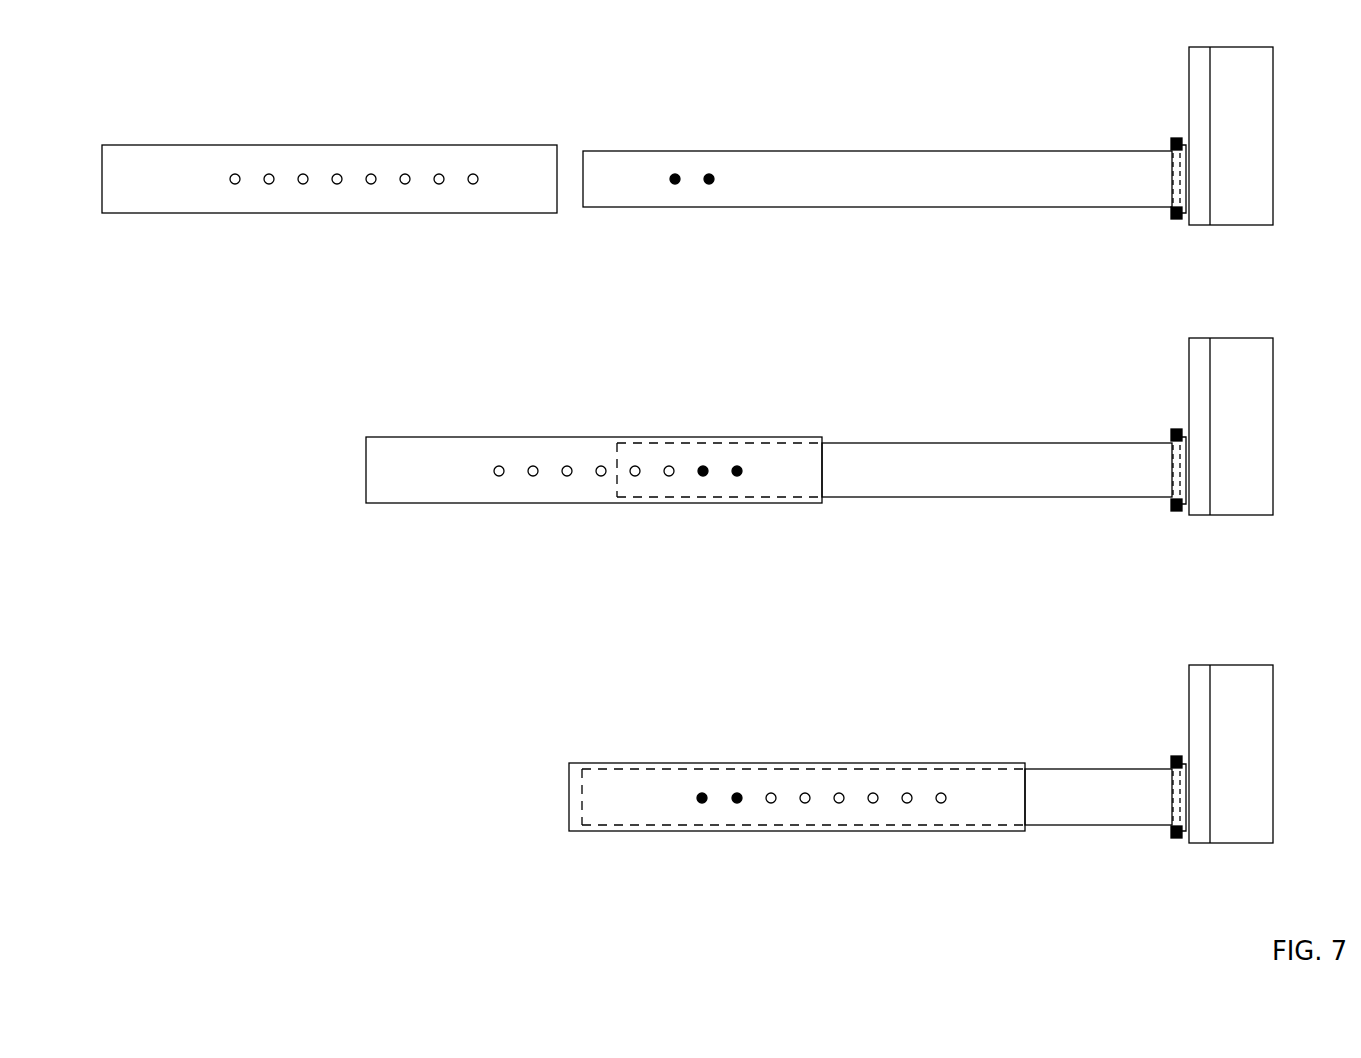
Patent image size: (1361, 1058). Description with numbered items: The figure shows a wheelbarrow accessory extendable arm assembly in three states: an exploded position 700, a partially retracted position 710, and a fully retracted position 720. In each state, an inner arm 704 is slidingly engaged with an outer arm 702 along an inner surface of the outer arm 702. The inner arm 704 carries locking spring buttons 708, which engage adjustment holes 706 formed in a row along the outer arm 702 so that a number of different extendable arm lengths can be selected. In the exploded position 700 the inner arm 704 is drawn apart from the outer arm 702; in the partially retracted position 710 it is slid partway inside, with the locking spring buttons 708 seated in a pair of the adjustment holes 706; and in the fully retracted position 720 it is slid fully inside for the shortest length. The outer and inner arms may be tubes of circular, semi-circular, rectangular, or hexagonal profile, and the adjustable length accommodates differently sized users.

The exploded position 700 is at (135, 76).
The outer arm 702 is at (337, 190).
The inner arm 704 is at (884, 196).
The adjustment holes 706 is at (401, 136).
The locking spring button 708 is at (749, 142).
The partially retracted position 710 is at (322, 396).
The fully retracted position 720 is at (539, 732).